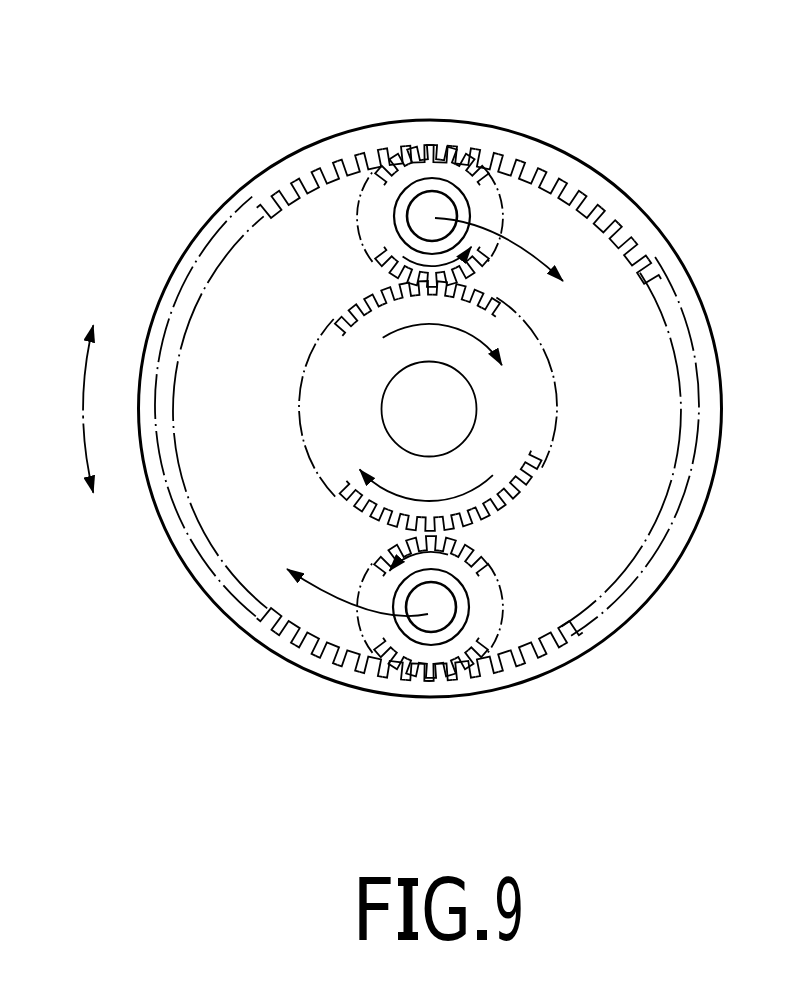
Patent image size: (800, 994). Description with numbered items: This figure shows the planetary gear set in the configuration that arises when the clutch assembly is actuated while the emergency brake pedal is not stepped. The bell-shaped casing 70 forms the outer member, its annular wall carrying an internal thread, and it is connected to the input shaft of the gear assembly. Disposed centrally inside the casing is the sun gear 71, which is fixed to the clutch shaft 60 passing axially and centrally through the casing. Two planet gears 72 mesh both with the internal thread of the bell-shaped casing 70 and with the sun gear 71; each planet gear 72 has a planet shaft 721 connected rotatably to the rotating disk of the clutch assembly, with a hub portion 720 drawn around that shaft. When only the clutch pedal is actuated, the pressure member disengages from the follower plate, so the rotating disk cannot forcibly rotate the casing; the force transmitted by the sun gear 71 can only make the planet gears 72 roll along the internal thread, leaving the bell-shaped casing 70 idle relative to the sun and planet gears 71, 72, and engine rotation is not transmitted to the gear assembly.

The bell-shaped casing 70 is at (605, 193).
The sun gear 71 is at (527, 380).
The clutch shaft 60 is at (457, 420).
The planet gears 72 is at (437, 170).
The bushing 720 is at (460, 625).
The planet shaft 721 is at (427, 622).